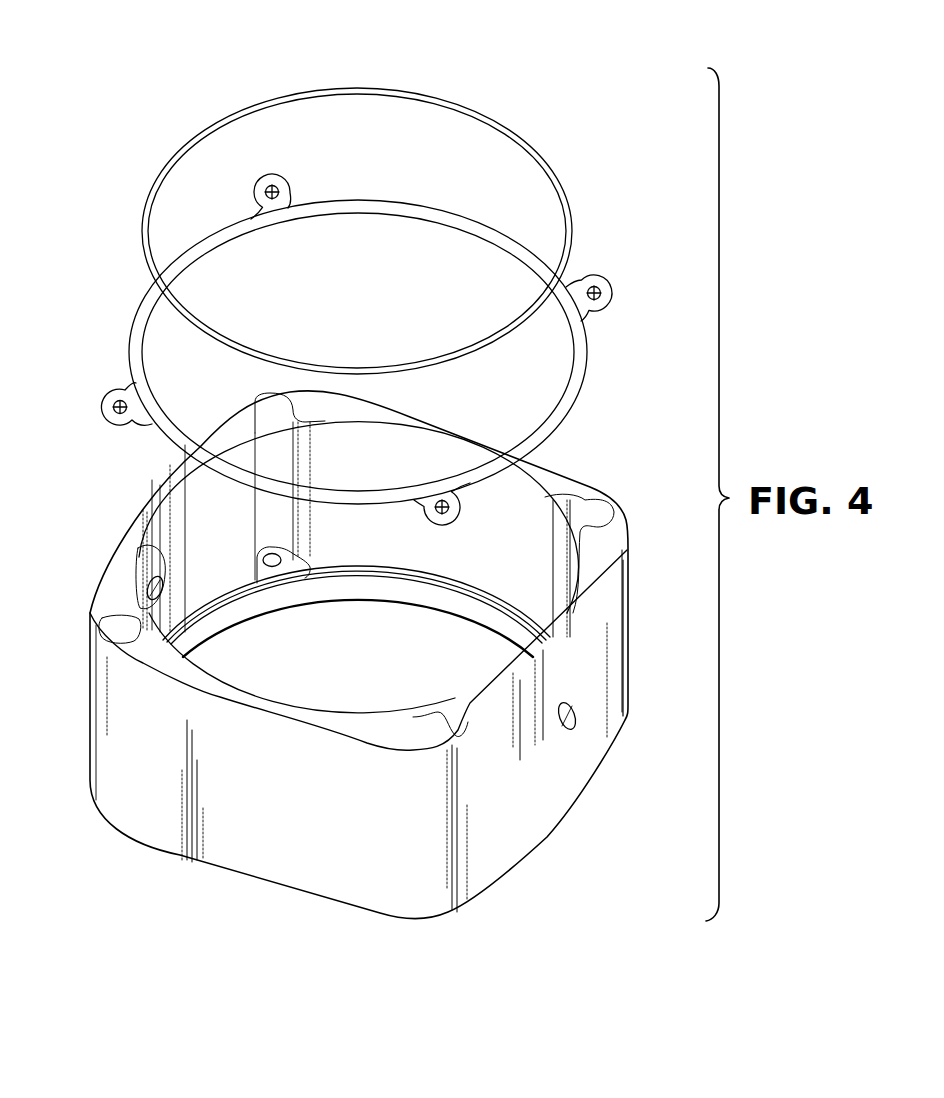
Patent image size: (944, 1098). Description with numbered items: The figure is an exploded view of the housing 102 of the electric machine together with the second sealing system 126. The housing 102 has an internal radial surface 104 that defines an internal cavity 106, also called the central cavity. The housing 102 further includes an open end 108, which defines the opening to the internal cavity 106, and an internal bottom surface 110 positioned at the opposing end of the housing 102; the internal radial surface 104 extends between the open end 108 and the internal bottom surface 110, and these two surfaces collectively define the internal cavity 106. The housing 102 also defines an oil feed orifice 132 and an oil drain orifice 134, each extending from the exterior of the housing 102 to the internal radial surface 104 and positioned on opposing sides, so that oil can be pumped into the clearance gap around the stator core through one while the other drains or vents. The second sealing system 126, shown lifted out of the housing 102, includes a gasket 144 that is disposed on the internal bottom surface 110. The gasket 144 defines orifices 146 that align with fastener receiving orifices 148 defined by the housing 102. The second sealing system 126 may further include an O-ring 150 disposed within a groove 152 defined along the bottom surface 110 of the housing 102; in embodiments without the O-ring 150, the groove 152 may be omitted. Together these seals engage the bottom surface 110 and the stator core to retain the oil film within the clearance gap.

The housing 102 is at (347, 663).
The internal radial surface 104 is at (382, 445).
The internal cavity 106 is at (373, 686).
The open end 108 is at (148, 660).
The internal bottom surface 110 is at (266, 577).
The second sealing system 126 is at (359, 313).
The oil feed orifice 132 is at (577, 722).
The oil drain orifice 134 is at (158, 560).
The gasket 144 is at (578, 398).
The orifices 146 is at (275, 190).
The fastener receiving orifices 148 is at (278, 566).
The O-ring 150 is at (445, 100).
The groove 152 is at (90, 613).